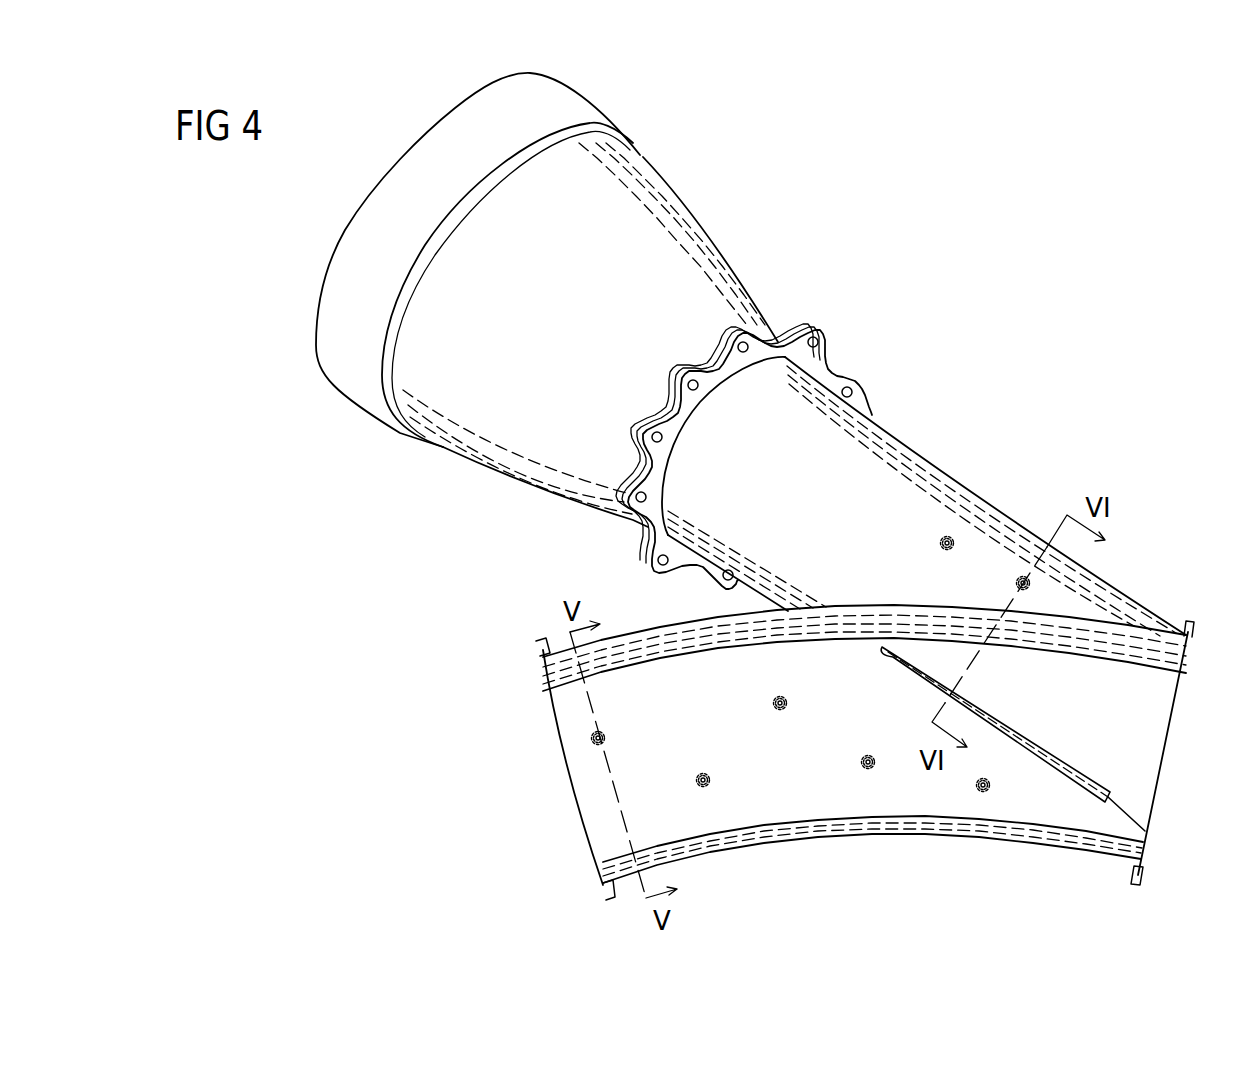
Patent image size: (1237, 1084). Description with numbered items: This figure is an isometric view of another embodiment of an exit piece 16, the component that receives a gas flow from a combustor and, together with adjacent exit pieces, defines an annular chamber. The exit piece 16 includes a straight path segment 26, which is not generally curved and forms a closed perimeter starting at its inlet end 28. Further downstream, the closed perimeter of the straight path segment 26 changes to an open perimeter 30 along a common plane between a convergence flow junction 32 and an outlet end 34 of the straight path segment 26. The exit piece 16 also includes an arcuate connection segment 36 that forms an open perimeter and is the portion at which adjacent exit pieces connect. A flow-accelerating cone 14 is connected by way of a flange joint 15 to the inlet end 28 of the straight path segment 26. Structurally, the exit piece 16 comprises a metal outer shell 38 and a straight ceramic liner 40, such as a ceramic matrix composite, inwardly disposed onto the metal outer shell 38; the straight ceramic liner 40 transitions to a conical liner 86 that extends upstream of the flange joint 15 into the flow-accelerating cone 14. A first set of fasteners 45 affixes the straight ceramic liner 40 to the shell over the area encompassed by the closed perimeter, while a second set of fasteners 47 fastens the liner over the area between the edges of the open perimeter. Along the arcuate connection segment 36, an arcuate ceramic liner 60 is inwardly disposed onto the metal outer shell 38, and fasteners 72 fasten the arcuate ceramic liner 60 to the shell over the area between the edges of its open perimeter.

The flow-accelerating cone 14 is at (482, 475).
The flange joint 15 is at (717, 360).
The exit piece 16 is at (974, 395).
The straight path segment 26 is at (1020, 483).
The inlet end 28 is at (700, 415).
The open perimeter 30 is at (1140, 713).
The convergence flow junction 32 is at (882, 650).
The outlet end 34 is at (1162, 775).
The arcuate connection segment 36 is at (917, 860).
The metal outer shell 38 is at (950, 475).
The straight ceramic liner 40 is at (890, 440).
The first set of fasteners 45 is at (938, 540).
The second set of fasteners 47 is at (1015, 580).
The arcuate ceramic liner 60 is at (1068, 840).
The fasteners 72 is at (772, 705).
The conical liner 86 is at (557, 477).